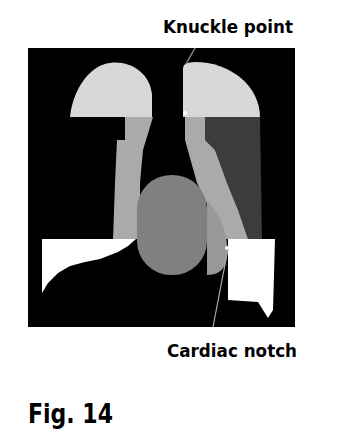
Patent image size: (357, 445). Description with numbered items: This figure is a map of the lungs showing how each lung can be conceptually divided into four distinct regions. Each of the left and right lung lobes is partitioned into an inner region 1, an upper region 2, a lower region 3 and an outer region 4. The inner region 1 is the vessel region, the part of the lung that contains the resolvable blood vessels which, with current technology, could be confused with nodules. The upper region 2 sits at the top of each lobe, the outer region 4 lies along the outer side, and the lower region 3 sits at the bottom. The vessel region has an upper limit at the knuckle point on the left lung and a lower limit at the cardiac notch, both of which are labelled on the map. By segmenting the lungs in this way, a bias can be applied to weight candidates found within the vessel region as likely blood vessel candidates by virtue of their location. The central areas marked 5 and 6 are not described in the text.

The inner region 1 is at (180, 178).
The upper region 2 is at (165, 89).
The lower region 3 is at (158, 278).
The outer region 4 is at (161, 187).
The heart region 5 is at (172, 225).
The cardiac notch region 6 is at (217, 237).